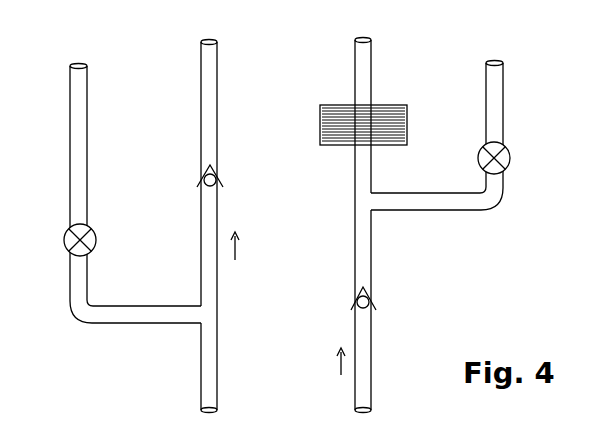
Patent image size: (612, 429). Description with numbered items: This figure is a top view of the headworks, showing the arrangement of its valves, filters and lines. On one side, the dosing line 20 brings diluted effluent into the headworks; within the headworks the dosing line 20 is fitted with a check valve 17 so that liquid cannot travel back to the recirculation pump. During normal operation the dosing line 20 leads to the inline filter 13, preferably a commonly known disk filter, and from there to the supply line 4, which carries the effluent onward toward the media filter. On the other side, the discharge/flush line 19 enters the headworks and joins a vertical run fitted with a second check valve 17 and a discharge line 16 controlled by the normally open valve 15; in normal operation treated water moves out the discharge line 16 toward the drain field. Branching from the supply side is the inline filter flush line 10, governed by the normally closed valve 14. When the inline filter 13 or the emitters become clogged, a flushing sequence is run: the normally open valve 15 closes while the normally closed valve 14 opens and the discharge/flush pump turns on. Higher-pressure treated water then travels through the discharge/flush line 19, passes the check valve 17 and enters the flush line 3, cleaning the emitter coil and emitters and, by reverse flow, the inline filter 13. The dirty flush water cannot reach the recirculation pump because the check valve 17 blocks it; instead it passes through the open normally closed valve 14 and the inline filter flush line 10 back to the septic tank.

The flush line 3 is at (207, 45).
The supply line 4 is at (358, 46).
The inline filter flush line 10 is at (497, 86).
The inline filter 13 is at (320, 125).
The normally closed valve 14 is at (510, 157).
The normally open valve 15 is at (70, 238).
The discharge line 16 is at (78, 73).
The check valve 17 is at (203, 178).
The discharge/flush line 19 is at (207, 394).
The dosing line 20 is at (362, 388).